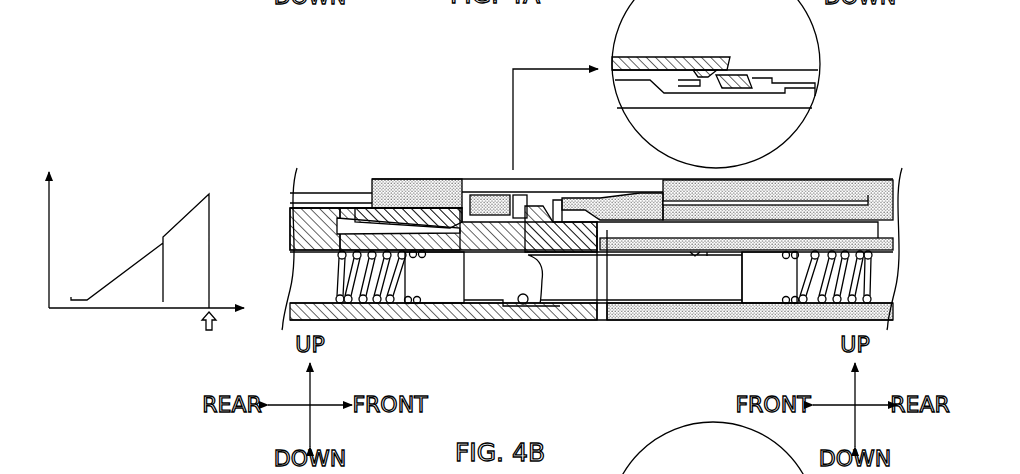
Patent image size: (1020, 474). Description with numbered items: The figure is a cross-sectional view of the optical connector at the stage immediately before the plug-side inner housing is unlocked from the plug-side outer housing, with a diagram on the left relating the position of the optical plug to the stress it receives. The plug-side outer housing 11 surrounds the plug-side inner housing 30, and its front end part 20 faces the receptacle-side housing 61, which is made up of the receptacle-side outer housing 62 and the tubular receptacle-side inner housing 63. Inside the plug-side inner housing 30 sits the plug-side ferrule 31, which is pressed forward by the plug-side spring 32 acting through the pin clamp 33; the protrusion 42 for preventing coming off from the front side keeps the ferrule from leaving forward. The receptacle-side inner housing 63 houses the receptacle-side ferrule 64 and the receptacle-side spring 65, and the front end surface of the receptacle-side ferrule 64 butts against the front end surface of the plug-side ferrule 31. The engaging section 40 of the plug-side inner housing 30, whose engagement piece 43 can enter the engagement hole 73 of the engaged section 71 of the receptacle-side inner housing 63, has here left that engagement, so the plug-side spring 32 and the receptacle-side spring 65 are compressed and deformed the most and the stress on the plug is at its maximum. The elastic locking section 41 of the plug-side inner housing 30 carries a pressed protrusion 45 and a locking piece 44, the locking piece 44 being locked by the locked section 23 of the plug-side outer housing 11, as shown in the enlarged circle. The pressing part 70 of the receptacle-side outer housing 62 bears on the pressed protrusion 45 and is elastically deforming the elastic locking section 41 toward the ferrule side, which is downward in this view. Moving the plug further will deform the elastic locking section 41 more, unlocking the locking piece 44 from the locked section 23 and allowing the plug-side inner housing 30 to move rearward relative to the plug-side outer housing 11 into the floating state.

The plug-side outer housing 11 is at (308, 192).
The front end part 20 is at (605, 213).
The locked section 23 is at (708, 57).
The plug-side inner housing 30 is at (428, 195).
The plug-side ferrule 31 is at (563, 292).
The plug-side spring 32 is at (380, 287).
The pin clamp 33 is at (447, 285).
The engaging section 40 is at (561, 173).
The elastic locking section 41 is at (463, 172).
The protrusion for preventing coming off from the front side 42 is at (527, 294).
The engagement piece 43 is at (528, 203).
The locking piece 44 is at (733, 90).
The pressed protrusion 45 is at (368, 192).
The receptacle-side housing 61 is at (778, 154).
The receptacle-side outer housing 62 is at (812, 130).
The receptacle-side inner housing 63 is at (830, 192).
The receptacle-side ferrule 64 is at (663, 285).
The receptacle-side spring 65 is at (813, 283).
The pressing part 70 is at (408, 180).
The engaged section 71 is at (488, 203).
The engagement hole 73 is at (545, 205).